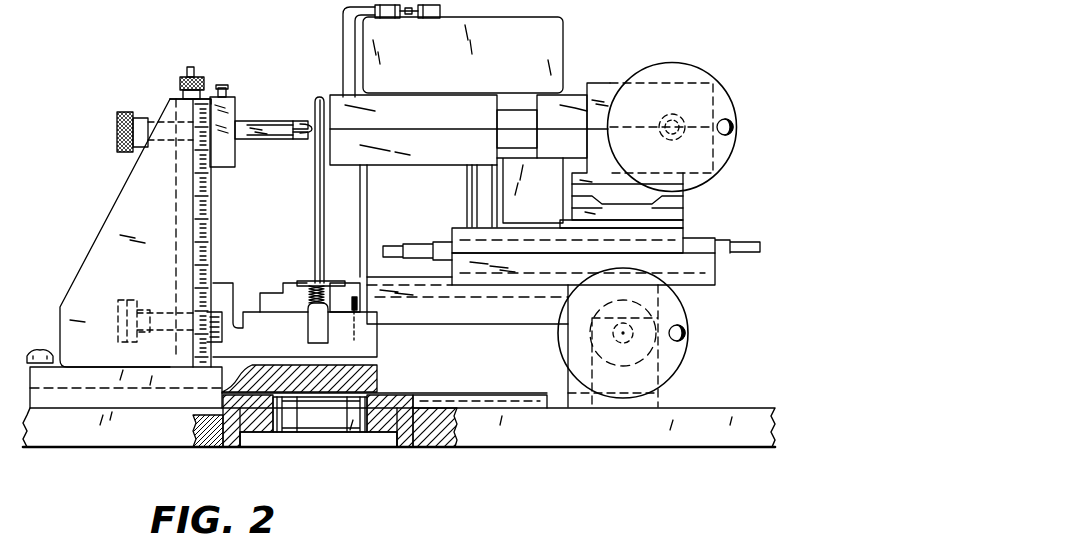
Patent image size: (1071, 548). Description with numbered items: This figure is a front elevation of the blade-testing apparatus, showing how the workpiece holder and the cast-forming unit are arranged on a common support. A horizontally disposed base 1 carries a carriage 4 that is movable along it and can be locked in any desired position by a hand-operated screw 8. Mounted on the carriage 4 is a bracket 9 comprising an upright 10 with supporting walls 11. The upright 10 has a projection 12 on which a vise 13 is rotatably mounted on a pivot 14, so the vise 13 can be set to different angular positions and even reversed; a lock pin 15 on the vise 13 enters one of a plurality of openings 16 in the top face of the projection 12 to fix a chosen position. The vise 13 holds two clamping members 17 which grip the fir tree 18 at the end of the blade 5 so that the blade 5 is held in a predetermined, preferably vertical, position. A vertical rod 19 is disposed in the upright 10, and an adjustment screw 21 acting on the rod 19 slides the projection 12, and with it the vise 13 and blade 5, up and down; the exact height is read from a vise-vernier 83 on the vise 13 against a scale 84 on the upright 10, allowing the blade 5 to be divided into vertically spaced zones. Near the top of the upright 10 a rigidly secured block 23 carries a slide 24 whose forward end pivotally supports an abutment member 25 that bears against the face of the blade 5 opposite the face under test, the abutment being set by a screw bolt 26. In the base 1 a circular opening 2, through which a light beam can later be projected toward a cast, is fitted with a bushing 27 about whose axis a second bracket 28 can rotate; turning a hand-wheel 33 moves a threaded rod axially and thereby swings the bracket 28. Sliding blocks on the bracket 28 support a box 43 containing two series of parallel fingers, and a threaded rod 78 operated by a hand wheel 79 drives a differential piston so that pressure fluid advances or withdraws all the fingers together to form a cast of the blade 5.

The base 1 is at (92, 440).
The circular opening 2 is at (303, 440).
The carriage 4 is at (52, 420).
The blade 5 is at (316, 183).
The hand-operated screw 8 is at (40, 350).
The bracket 9 is at (165, 93).
The upright 10 is at (176, 203).
The supporting walls 11 is at (98, 243).
The projection 12 is at (255, 335).
The vise 13 is at (277, 318).
The pivot 14 is at (345, 350).
The lock pin 15 is at (353, 296).
The openings 16 is at (370, 327).
The clamping members 17 is at (312, 281).
The fir tree 18 is at (318, 318).
The vertical rod 19 is at (195, 68).
The adjustment screw 21 is at (182, 80).
The block 23 is at (231, 100).
The slide 24 is at (262, 121).
The abutment member 25 is at (305, 140).
The screw bolt 26 is at (157, 115).
The bushing 27 is at (233, 432).
The second bracket 28 is at (432, 432).
The hand-wheel 33 is at (672, 358).
The box 43 is at (608, 95).
The threaded rod 78 is at (672, 127).
The hand wheel 79 is at (723, 98).
The vise-vernier 83 is at (215, 318).
The scale 84 is at (200, 222).